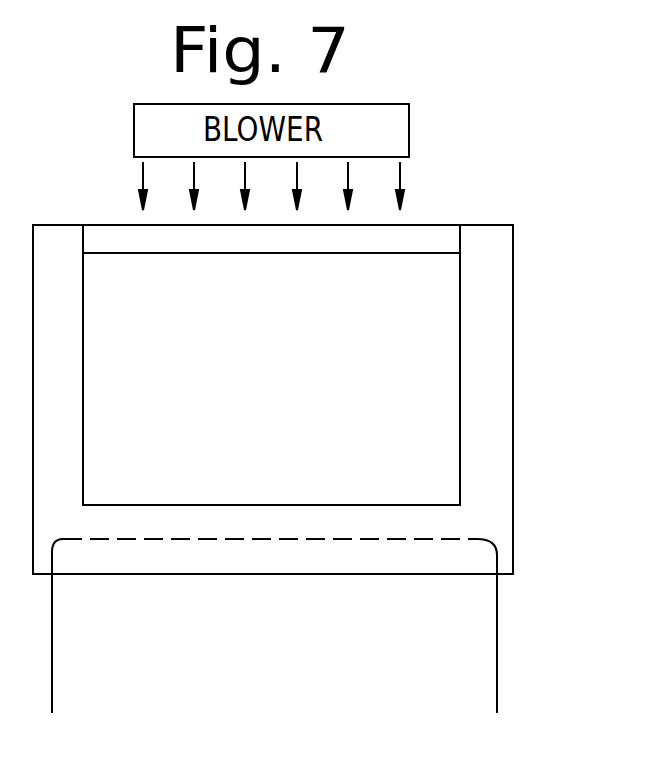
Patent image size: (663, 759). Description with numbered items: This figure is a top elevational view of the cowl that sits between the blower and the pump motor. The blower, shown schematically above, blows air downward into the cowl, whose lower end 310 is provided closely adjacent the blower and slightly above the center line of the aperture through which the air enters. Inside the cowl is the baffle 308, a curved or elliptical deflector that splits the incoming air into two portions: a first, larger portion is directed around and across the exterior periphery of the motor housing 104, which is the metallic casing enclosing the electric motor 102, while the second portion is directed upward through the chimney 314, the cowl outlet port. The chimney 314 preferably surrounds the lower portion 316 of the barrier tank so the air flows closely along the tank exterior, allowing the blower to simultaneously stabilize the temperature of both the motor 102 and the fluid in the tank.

The lower end 310 is at (422, 225).
The baffle 308 is at (265, 396).
The chimney 314 is at (460, 297).
The lower portion 316 is at (480, 422).
The electric motor 102 is at (270, 675).
The casing 104 is at (497, 633).